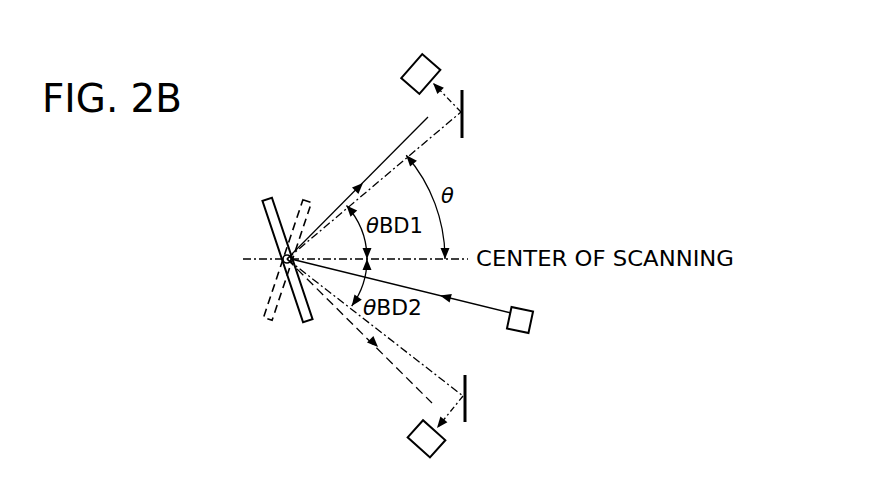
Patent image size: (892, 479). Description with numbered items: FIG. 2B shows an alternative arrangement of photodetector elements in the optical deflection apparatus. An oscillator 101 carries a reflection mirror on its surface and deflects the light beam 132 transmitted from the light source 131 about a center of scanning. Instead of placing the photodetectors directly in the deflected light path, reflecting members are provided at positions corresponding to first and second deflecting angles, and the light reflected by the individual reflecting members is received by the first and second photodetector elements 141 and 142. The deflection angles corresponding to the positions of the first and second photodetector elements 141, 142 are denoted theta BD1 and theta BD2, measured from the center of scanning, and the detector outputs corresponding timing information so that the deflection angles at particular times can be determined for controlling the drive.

The oscillator 101 is at (262, 307).
The light source 131 is at (533, 309).
The light beam 132 is at (472, 307).
The first photodetector element 141 is at (425, 56).
The second photodetector element 142 is at (444, 452).